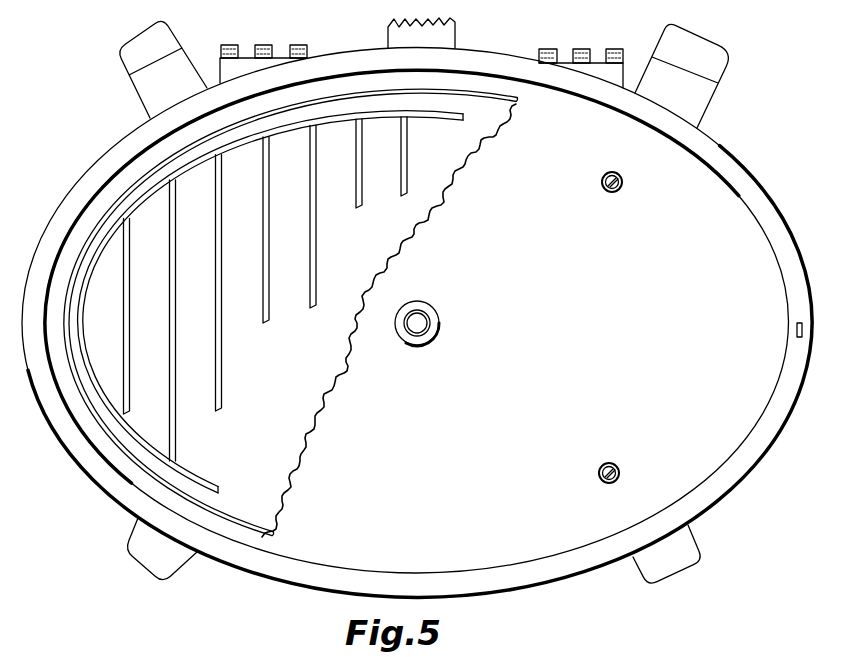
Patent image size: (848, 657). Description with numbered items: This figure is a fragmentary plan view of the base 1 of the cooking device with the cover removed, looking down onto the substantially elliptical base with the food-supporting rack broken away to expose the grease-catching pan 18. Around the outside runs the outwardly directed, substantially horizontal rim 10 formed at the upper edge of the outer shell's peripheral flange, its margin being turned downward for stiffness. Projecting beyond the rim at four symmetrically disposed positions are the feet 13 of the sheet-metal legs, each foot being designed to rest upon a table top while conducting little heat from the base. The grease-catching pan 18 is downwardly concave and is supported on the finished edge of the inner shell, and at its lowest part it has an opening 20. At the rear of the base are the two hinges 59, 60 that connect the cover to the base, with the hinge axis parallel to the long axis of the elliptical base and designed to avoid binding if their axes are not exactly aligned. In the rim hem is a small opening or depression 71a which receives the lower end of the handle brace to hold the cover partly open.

The base 1 is at (74, 483).
The rim 10 is at (781, 411).
The foot 13 is at (655, 572).
The grease-catching pan 18 is at (307, 553).
The opening 20 is at (427, 317).
The hinge 59 is at (222, 70).
The hinge 60 is at (623, 78).
The opening or depression 71a is at (797, 330).